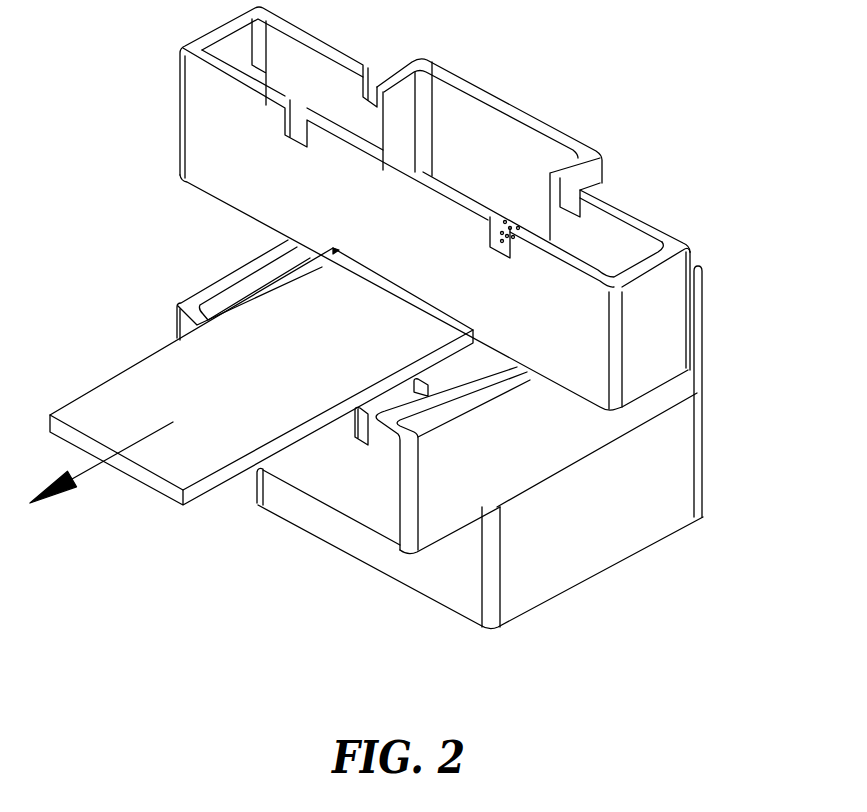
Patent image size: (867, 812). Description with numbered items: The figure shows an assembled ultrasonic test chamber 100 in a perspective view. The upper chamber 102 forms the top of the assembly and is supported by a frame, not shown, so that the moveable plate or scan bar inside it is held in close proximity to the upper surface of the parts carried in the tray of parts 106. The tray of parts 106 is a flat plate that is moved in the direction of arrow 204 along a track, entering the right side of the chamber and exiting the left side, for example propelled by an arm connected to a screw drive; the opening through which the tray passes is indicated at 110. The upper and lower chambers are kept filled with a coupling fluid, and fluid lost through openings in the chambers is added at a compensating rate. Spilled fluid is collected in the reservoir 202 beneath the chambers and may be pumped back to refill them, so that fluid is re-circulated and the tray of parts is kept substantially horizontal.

The ultrasonic test chamber 100 is at (232, 662).
The upper chamber 102 is at (605, 167).
The tray of parts 106 is at (90, 392).
The slot 110 is at (188, 298).
The reservoir 202 is at (612, 568).
The arrow 204 is at (88, 474).